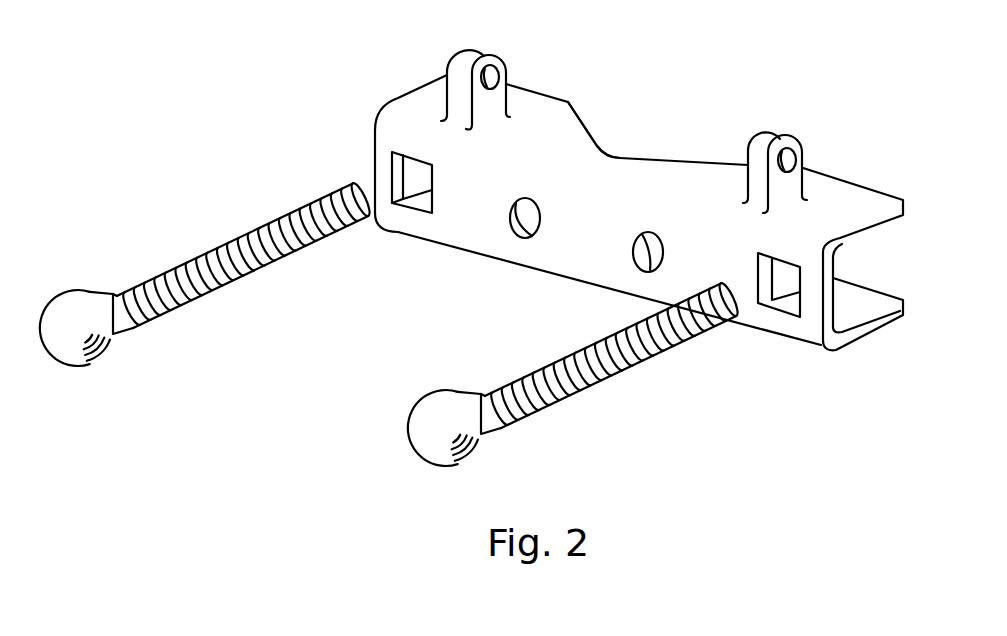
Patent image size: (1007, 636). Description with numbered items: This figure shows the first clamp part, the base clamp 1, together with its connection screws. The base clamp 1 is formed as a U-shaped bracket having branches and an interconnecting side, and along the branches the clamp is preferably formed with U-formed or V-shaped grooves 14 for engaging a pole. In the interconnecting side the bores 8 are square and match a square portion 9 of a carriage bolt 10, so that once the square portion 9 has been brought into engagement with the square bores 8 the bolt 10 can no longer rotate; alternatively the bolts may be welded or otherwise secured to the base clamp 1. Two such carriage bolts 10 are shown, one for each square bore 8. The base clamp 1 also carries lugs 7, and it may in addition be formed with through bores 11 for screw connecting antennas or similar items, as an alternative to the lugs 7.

The base clamp 1 is at (418, 102).
The lugs 7 is at (500, 100).
The square bores 8 is at (408, 168).
The square portion 9 is at (120, 340).
The carriage bolt 10 is at (260, 260).
The through bores 11 is at (523, 219).
The grooves 14 is at (600, 143).